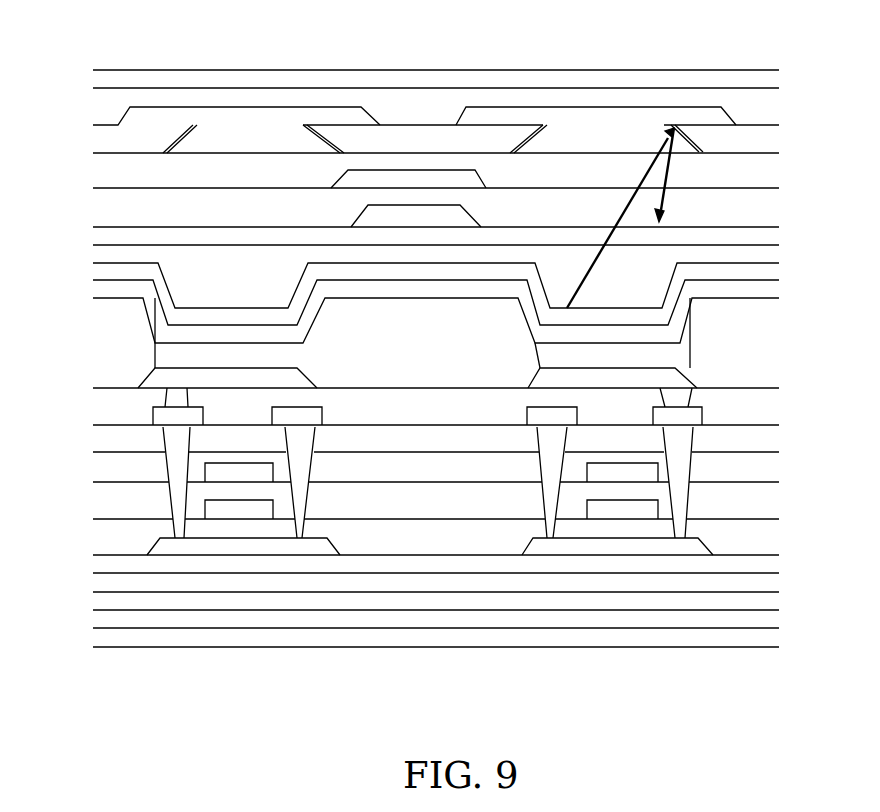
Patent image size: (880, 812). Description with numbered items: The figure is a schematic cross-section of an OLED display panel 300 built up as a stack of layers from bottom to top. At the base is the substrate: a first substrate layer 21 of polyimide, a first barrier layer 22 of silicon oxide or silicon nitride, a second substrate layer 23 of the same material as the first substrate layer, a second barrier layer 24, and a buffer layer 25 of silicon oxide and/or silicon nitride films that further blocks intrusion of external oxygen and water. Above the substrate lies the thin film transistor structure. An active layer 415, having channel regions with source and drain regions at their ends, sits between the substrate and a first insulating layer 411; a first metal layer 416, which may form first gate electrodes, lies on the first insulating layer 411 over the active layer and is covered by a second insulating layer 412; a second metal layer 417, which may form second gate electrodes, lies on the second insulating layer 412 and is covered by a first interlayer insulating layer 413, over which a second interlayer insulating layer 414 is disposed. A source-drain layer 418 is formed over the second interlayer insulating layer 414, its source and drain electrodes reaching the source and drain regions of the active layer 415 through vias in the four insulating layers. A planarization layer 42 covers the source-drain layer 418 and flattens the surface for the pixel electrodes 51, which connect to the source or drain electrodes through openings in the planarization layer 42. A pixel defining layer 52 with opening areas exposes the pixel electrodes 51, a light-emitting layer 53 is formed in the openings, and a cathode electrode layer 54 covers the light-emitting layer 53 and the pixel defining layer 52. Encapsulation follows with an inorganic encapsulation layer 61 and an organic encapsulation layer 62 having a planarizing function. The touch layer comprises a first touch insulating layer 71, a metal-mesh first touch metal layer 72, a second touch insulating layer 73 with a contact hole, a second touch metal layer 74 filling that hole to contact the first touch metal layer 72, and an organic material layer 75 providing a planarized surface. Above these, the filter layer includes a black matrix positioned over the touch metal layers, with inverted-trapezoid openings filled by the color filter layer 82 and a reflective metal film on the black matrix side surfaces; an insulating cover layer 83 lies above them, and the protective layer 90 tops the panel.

The OLED display panel 300 is at (100, 24).
The protective layer 90 is at (777, 73).
The insulating cover layer 83 is at (776, 101).
The color filter layer 82 is at (118, 111).
The organic material layer 75 is at (774, 168).
The second touch metal layer 74 is at (345, 178).
The second touch insulating layer 73 is at (773, 201).
The first touch metal layer 72 is at (356, 213).
The first touch insulating layer 71 is at (773, 231).
The organic encapsulation layer 62 is at (773, 248).
The inorganic encapsulation layer 61 is at (773, 266).
The cathode electrode layer 54 is at (772, 289).
The light-emitting layer 53 is at (178, 355).
The pixel defining layer 52 is at (773, 320).
The pixel electrodes 51 is at (697, 384).
The planarization layer 42 is at (773, 428).
The source-drain layer 418 is at (153, 417).
The second metal layer 417 is at (200, 465).
The first metal layer 416 is at (205, 505).
The active layer 415 is at (147, 553).
The second interlayer insulating layer 414 is at (773, 454).
The first interlayer insulating layer 413 is at (777, 479).
The second insulating layer 412 is at (773, 504).
The first insulating layer 411 is at (773, 546).
The buffer layer 25 is at (775, 574).
The second barrier layer 24 is at (775, 593).
The second substrate layer 23 is at (775, 611).
The first barrier layer 22 is at (775, 629).
The first substrate layer 21 is at (775, 648).